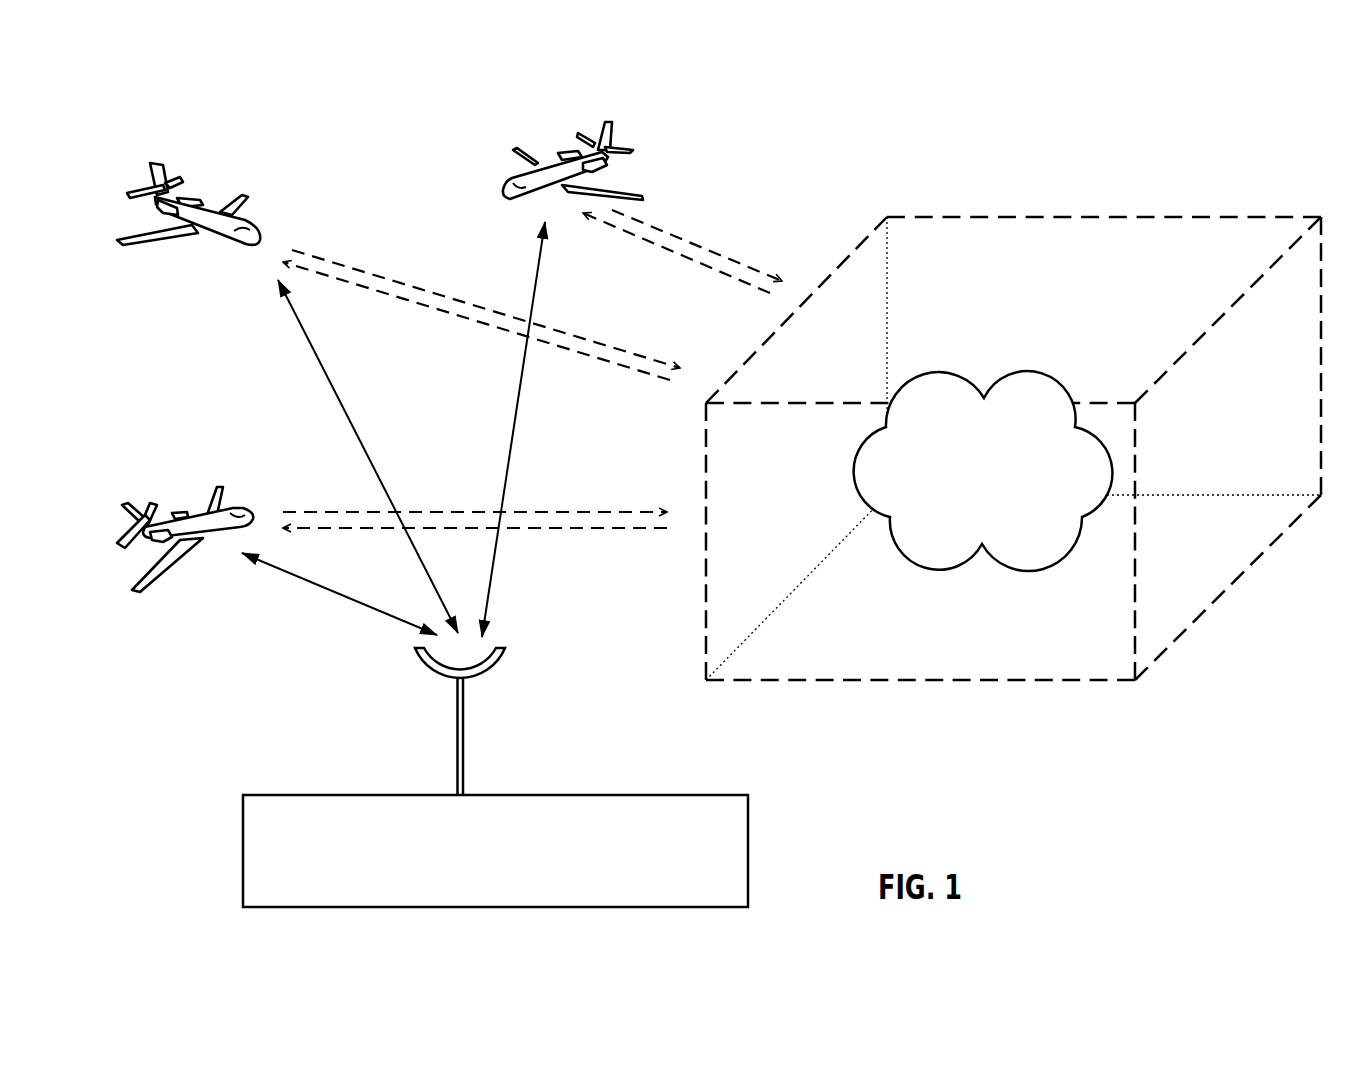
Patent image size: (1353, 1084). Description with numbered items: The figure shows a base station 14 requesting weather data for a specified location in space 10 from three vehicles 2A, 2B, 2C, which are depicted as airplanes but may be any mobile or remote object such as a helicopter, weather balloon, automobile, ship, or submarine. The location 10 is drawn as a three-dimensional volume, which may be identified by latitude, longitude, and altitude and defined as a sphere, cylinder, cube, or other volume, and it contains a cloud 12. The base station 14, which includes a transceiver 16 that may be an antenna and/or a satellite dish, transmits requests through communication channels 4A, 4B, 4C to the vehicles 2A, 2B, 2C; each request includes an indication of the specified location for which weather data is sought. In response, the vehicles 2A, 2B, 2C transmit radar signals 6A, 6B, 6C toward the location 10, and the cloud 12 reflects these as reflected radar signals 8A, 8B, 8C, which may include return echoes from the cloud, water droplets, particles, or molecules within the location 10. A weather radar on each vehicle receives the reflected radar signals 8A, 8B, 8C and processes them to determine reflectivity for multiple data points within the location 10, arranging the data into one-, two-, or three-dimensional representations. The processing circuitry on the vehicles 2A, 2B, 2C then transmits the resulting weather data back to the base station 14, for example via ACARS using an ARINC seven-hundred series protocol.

The vehicle 2A is at (246, 153).
The vehicle 2B is at (663, 159).
The vehicle 2C is at (170, 476).
The communication channel 4A is at (293, 311).
The communication channel 4B is at (510, 461).
The communication channel 4C is at (337, 595).
The radar signal 6A is at (401, 284).
The radar signal 6B is at (700, 248).
The radar signal 6C is at (568, 511).
The reflected radar signal 8A is at (457, 315).
The reflected radar signal 8B is at (693, 258).
The reflected radar signal 8C is at (635, 530).
The specified location in space 10 is at (1186, 713).
The cloud 12 is at (1015, 566).
The base station 14 is at (482, 877).
The transceiver 16 is at (470, 679).